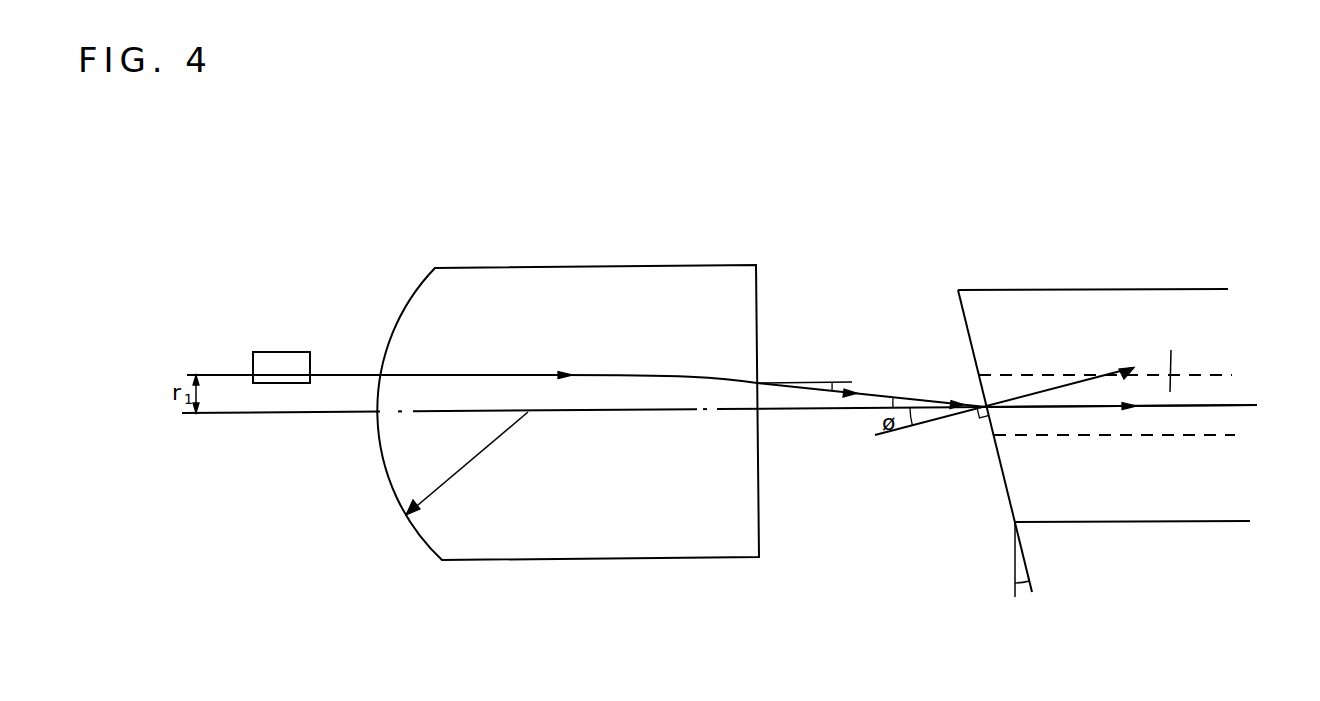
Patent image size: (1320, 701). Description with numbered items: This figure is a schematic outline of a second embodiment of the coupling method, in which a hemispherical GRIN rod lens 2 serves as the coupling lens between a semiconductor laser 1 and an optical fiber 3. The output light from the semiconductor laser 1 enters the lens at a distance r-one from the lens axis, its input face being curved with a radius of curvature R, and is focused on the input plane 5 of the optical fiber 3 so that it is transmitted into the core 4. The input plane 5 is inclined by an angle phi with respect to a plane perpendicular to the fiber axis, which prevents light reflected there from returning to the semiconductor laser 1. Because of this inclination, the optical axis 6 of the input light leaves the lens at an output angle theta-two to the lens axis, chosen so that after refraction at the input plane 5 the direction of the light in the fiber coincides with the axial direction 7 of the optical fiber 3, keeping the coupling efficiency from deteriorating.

The semiconductor laser 1 is at (268, 352).
The GRIN rod lens 2 is at (530, 528).
The optical fiber 3 is at (1107, 420).
The core 4 is at (1092, 437).
The input plane 5 is at (1003, 475).
The optical axis 6 is at (838, 392).
The fiber axis 7 is at (1068, 405).